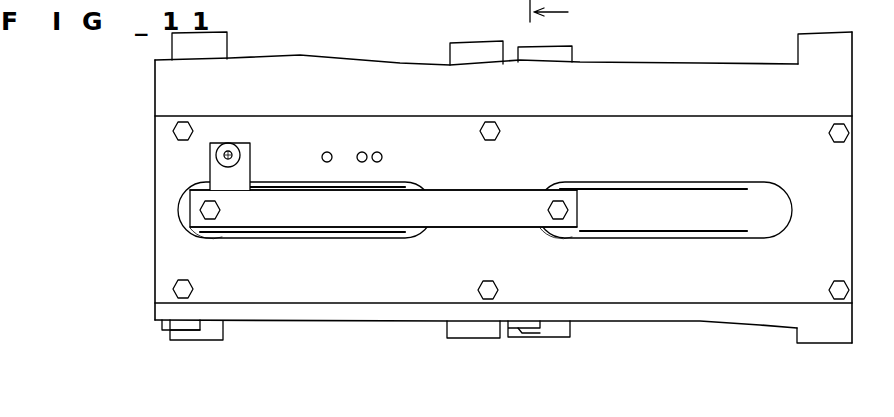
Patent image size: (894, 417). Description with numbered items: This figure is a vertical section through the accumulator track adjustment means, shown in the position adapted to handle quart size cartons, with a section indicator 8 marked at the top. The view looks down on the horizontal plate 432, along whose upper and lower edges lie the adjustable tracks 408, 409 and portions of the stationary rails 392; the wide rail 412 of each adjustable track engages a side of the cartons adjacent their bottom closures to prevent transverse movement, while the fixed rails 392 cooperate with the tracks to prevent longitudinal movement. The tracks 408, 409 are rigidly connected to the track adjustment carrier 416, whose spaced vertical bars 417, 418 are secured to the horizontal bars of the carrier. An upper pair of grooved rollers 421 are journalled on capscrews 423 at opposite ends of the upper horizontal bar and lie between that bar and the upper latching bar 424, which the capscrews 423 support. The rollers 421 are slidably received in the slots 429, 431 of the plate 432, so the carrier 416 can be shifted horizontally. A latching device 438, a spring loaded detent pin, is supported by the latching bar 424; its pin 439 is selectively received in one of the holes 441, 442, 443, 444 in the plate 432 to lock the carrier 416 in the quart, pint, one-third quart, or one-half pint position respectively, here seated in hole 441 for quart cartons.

The section line 8 is at (557, 13).
The rail 392 is at (466, 52).
The adjustable track 408 is at (212, 44).
The adjustable track 409 is at (574, 55).
The wide rail 412 is at (196, 53).
The track adjustment carrier 416 is at (387, 224).
The vertical extending bar 417 is at (166, 325).
The vertical extending bar 418 is at (522, 326).
The upper grooved roller 421 is at (208, 237).
The capscrew 423 is at (202, 207).
The upper latching bar 424 is at (450, 200).
The slot 429 is at (305, 236).
The slot 431 is at (672, 238).
The horizontal plate 432 is at (636, 147).
The latching device 438 is at (230, 143).
The pin 439 is at (231, 151).
The hole 441 is at (229, 178).
The hole 442 is at (321, 158).
The hole 443 is at (358, 152).
The hole 444 is at (376, 151).